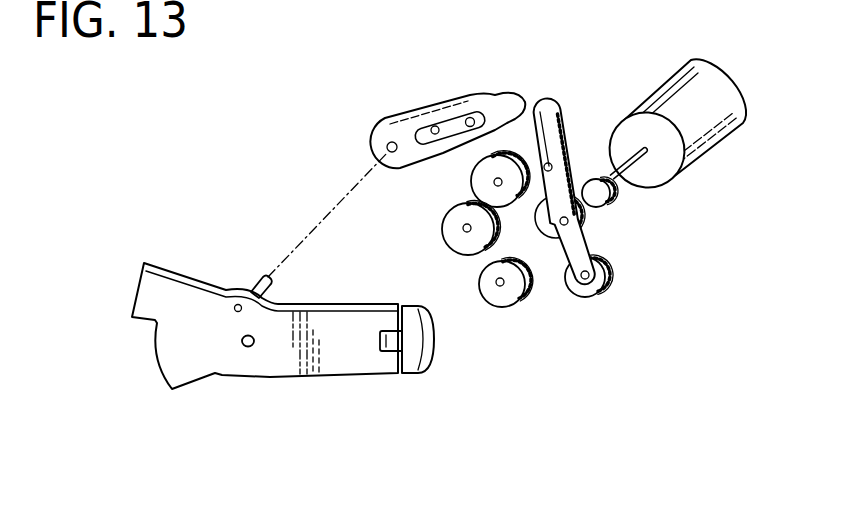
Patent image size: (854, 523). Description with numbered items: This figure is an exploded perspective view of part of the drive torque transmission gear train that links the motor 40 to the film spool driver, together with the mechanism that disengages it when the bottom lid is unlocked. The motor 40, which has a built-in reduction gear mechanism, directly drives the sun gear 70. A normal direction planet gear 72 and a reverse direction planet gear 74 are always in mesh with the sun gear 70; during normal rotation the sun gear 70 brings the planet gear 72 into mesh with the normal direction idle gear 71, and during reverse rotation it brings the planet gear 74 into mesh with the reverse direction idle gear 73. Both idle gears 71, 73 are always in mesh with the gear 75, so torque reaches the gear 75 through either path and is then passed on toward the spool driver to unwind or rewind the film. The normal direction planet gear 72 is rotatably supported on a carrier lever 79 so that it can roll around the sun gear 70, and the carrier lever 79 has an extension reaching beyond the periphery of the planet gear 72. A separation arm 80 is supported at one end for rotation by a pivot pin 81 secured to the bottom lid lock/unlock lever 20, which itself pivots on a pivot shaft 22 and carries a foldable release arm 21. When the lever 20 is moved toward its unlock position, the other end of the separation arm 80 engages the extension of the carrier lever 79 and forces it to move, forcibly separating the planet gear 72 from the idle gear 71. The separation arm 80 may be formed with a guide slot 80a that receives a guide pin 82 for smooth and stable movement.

The bottom lid lock/unlock lever 20 is at (318, 381).
The release arm 21 is at (418, 356).
The pivot shaft 22 is at (252, 347).
The motor 40 is at (725, 148).
The sun gear 70 is at (612, 236).
The normal direction idle gear 71 is at (472, 177).
The normal direction planet gear 72 is at (585, 165).
The reverse direction idle gear 73 is at (517, 302).
The reverse direction planet gear 74 is at (608, 297).
The gear 75 is at (441, 245).
The carrier lever 79 is at (551, 116).
The separation arm 80 is at (435, 127).
The guide slot 80a is at (431, 116).
The pivot pin 81 is at (262, 274).
The guide pin 82 is at (471, 119).